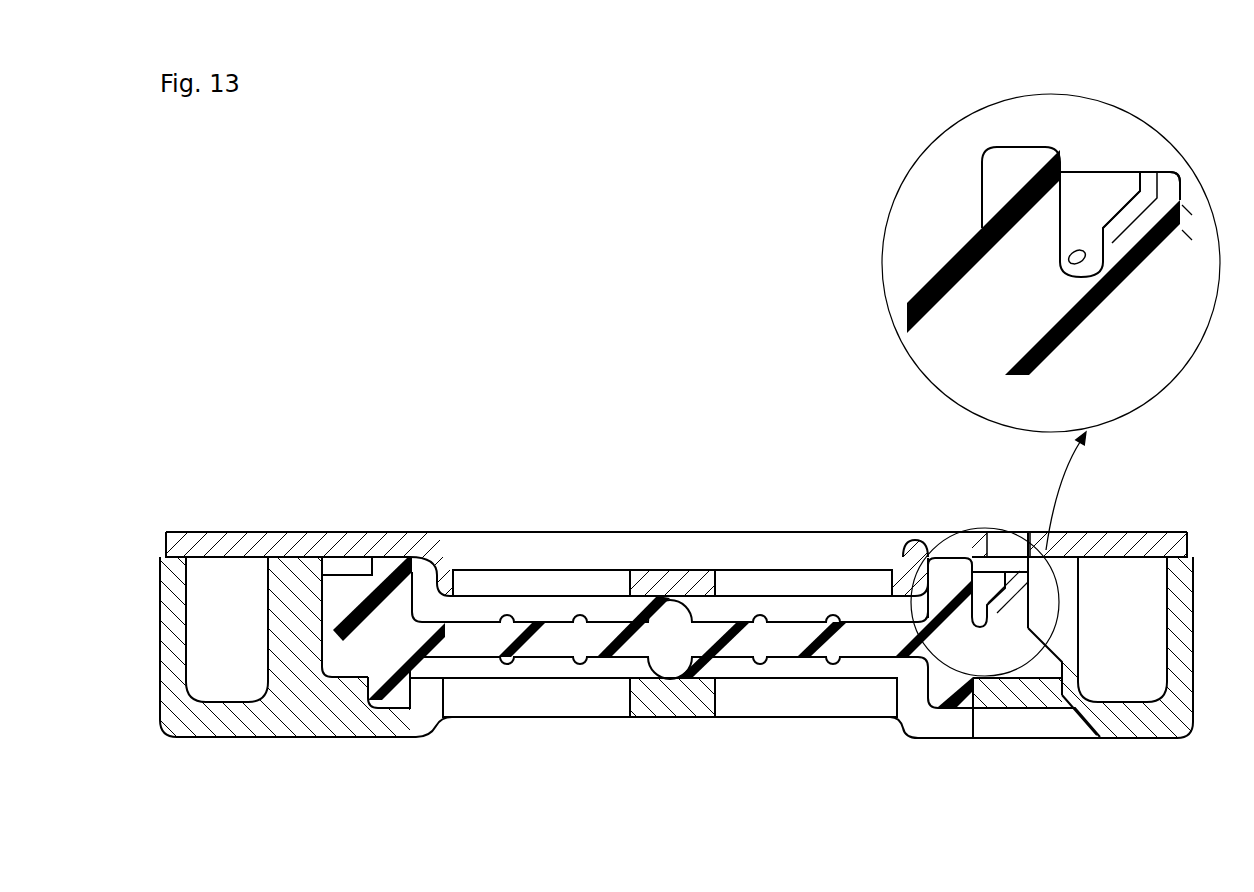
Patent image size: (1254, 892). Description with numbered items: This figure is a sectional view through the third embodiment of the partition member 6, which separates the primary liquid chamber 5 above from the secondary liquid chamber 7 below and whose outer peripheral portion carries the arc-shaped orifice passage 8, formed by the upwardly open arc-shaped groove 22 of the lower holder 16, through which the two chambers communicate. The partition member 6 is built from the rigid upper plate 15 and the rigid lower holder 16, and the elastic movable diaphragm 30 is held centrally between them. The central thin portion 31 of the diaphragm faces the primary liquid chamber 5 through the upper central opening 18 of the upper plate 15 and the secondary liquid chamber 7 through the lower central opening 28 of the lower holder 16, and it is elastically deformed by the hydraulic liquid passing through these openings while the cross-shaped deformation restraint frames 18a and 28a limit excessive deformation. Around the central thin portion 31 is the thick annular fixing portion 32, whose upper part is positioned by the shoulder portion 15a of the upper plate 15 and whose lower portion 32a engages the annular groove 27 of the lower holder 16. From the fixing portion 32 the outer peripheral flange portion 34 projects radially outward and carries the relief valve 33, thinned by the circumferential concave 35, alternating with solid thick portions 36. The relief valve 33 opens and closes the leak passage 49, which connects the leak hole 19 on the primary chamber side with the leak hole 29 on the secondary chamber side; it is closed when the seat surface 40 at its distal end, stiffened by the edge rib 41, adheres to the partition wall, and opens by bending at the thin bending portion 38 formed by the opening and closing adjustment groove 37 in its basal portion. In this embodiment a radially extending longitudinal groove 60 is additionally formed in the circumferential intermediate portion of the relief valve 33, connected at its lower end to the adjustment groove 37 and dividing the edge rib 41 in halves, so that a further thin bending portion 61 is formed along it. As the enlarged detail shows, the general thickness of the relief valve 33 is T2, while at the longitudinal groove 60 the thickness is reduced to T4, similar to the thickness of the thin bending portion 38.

The primary liquid chamber 5 is at (780, 430).
The partition member 6 is at (162, 466).
The secondary liquid chamber 7 is at (786, 815).
The orifice passage 8 is at (200, 605).
The upper plate 15 is at (245, 532).
The shoulder portion 15a is at (445, 568).
The lower holder 16 is at (198, 744).
The upper central opening 18 is at (545, 585).
The deformation restraint frame 18a is at (662, 585).
The leak hole 19 is at (1012, 556).
The arc-shaped groove 22 is at (205, 665).
The annular groove 27 is at (435, 712).
The lower central opening 28 is at (545, 700).
The deformation restraint frame 28a is at (660, 700).
The leak hole 29 is at (1035, 740).
The elastic movable diaphragm 30 is at (772, 602).
The central thin portion 31 is at (610, 630).
The fixing portion 32 is at (368, 576).
The lower portion 32a is at (400, 690).
The relief valve 33 is at (1012, 575).
The outer peripheral flange portion 34 is at (352, 588).
The concave 35 is at (1085, 180).
The solid thick portion 36 is at (345, 640).
The opening and closing adjustment groove 37 is at (975, 598).
The thin bending portion 38 is at (987, 700).
The seat surface 40 is at (1186, 192).
The edge rib 41 is at (1176, 170).
The leak passage 49 is at (1045, 655).
The longitudinal groove 60 is at (1018, 578).
The thin bending portion 61 is at (1012, 612).
The general thickness of relief valve T2 is at (1160, 252).
The thickness at longitudinal groove T4 is at (1170, 240).